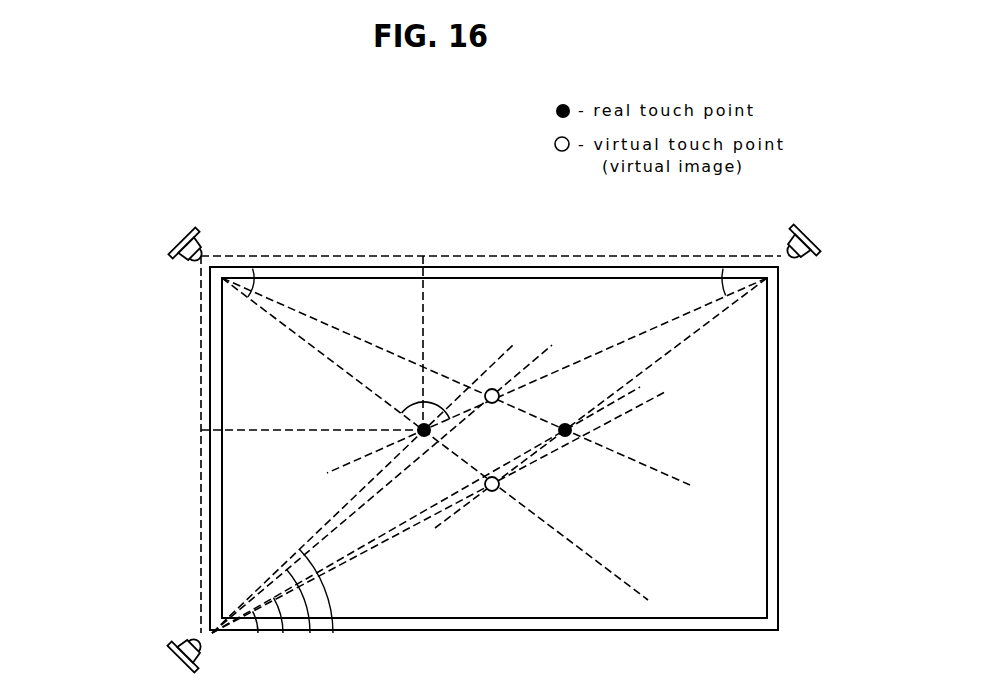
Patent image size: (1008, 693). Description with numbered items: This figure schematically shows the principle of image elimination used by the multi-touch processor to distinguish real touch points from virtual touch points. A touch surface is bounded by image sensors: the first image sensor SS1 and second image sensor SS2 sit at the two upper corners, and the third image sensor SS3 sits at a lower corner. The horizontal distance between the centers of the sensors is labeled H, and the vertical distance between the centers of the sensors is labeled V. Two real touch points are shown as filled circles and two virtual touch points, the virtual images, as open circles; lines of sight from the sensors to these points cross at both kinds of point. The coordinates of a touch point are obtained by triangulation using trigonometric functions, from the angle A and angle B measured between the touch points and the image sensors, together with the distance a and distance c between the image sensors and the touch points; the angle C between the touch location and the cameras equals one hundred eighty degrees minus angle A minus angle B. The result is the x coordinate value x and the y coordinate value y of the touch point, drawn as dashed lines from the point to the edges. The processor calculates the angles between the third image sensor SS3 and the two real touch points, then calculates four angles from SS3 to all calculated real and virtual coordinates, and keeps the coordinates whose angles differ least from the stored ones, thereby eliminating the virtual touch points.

The first image sensor SS1 is at (809, 246).
The second image sensor SS2 is at (180, 249).
The third image sensor SS3 is at (180, 650).
The angle A is at (242, 290).
The angle B is at (426, 403).
The angle C is at (716, 282).
The distance a is at (547, 375).
The distance c is at (435, 439).
The x coordinate value x is at (422, 335).
The y coordinate value y is at (306, 436).
The horizontal distance between centers of sensors H is at (491, 235).
The vertical distance between centers of sensors V is at (117, 444).